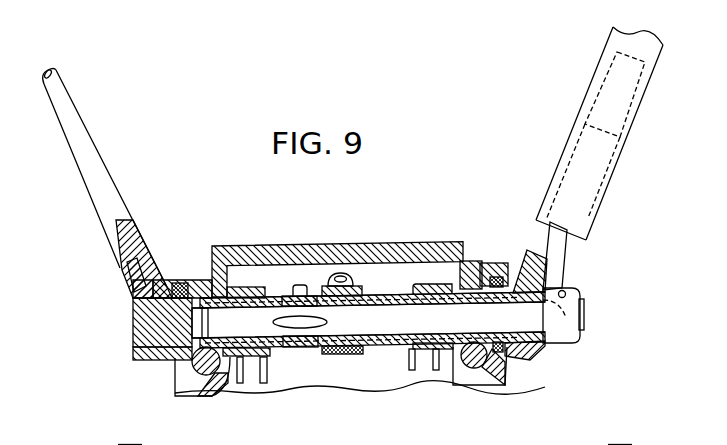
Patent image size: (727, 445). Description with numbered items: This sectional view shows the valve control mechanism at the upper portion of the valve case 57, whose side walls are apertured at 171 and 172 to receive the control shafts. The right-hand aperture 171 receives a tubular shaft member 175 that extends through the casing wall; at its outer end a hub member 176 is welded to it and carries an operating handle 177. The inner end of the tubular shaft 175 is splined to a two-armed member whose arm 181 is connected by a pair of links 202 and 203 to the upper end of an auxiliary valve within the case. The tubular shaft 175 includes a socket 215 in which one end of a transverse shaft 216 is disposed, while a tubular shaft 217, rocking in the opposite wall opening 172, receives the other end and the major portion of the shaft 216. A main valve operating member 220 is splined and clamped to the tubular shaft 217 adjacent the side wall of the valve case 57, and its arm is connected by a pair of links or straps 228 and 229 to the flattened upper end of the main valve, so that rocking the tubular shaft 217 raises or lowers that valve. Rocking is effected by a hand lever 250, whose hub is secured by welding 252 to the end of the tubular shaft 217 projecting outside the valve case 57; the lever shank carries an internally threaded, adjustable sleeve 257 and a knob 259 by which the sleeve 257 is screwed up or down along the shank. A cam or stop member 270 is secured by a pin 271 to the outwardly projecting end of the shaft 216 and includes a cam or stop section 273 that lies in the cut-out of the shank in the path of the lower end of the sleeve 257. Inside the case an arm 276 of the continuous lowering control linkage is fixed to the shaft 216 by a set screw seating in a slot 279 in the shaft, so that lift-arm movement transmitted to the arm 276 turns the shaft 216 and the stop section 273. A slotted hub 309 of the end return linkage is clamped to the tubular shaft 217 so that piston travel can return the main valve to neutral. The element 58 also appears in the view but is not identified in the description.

The valve case 57 is at (388, 376).
The bearing 58 is at (212, 372).
The side wall aperture 171 is at (195, 292).
The side wall aperture 172 is at (478, 292).
The tubular shaft member 175 is at (212, 288).
The hub member 176 is at (127, 274).
The operating handle 177 is at (100, 184).
The arm 181 is at (240, 282).
The link 202 is at (267, 380).
The link 203 is at (242, 384).
The socket 215 is at (172, 329).
The transverse shaft 216 is at (375, 303).
The tubular shaft 217 is at (399, 289).
The main valve operating member 220 is at (435, 281).
The link 228 is at (420, 370).
The link 229 is at (440, 370).
The hand lever 250 is at (563, 150).
The welding 252 is at (540, 344).
The sleeve 257 is at (130, 439).
The knob 259 is at (620, 439).
The cam member 270 is at (575, 259).
The pin 271 is at (568, 293).
The cam section 273 is at (565, 250).
The arm 276 is at (297, 347).
The slot 279 is at (313, 328).
The slotted hub 309 is at (326, 290).